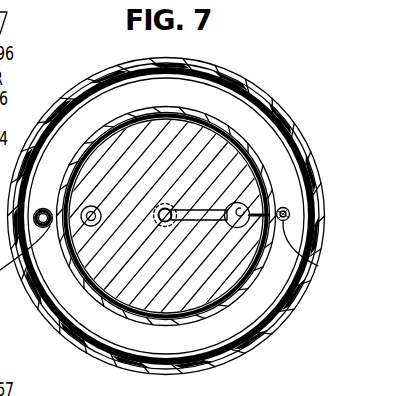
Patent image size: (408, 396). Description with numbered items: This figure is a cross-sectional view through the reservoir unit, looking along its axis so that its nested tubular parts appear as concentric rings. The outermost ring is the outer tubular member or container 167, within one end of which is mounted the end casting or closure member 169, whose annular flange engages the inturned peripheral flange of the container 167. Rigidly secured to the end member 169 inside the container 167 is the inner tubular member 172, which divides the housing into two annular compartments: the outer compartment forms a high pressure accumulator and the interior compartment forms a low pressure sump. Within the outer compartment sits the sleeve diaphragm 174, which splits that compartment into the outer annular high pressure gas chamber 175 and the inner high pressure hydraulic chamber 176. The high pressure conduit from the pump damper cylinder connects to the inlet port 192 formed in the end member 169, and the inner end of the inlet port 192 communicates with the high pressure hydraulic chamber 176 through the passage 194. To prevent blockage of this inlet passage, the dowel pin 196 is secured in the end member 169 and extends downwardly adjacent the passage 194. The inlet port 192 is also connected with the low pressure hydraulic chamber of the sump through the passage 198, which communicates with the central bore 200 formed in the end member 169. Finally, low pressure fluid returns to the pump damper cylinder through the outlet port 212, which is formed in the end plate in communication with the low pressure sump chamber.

The outer tubular member or container 167 is at (236, 356).
The end casting or closure member 169 is at (200, 140).
The inner tubular member 172 is at (170, 108).
The sleeve diaphragm 174 is at (88, 89).
The outer annular high pressure gas chamber 175 is at (107, 358).
The inner high pressure hydraulic chamber 176 is at (247, 140).
The inlet port 192 is at (250, 205).
The passage 194 is at (318, 266).
The dowel pin 196 is at (290, 213).
The passage 198 is at (200, 221).
The central bore 200 is at (157, 226).
The outlet port 212 is at (100, 193).